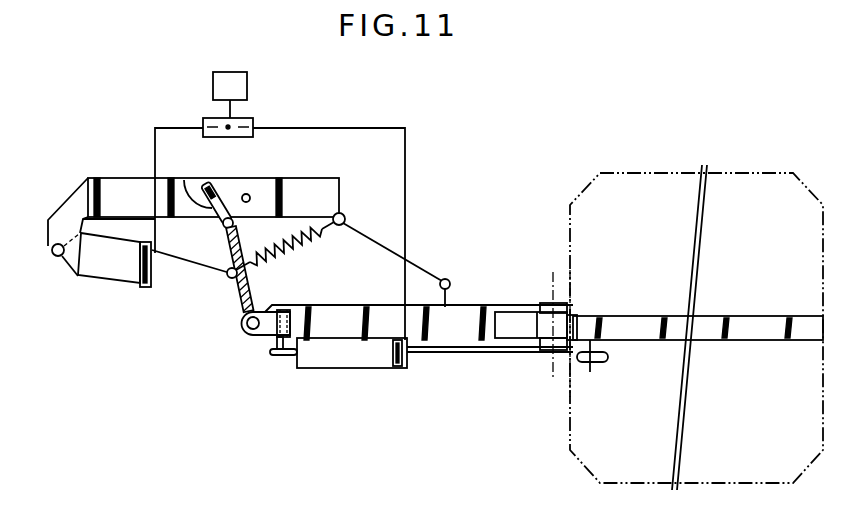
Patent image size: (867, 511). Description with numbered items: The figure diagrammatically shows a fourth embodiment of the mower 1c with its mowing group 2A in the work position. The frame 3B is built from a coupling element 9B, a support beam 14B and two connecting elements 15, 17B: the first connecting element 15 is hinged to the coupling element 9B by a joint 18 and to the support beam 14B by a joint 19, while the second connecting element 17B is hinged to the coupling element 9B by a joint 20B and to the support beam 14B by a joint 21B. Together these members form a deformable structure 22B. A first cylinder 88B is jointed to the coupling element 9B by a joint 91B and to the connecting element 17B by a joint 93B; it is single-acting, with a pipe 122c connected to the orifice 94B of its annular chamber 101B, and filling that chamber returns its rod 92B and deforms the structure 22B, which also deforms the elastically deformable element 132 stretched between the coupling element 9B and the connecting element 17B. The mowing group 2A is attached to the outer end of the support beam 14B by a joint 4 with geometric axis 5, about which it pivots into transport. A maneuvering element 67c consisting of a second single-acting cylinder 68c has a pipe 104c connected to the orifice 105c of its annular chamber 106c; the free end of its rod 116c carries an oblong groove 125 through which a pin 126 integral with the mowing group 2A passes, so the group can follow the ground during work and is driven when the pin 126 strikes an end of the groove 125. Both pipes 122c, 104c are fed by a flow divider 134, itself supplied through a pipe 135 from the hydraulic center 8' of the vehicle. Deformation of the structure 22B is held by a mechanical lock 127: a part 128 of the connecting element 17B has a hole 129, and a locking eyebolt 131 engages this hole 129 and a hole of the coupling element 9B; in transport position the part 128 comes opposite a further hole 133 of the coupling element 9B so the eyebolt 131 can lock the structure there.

The mower 1c is at (494, 238).
The mowing group 2A is at (761, 315).
The frame 3B is at (73, 180).
The joint 4 is at (545, 302).
The geometric axis 5 is at (553, 273).
The hydraulic center 8' is at (230, 68).
The coupling element 9B is at (340, 178).
The support beam 14B is at (317, 315).
The first connecting element 15 is at (384, 249).
The second connecting element 17B is at (247, 282).
The joint 18 is at (353, 210).
The joint 19 is at (445, 279).
The joint 20B is at (234, 225).
The joint 21B is at (248, 333).
The deformable structure 22B is at (395, 292).
The maneuvering element 67c is at (310, 371).
The second cylinder 68c is at (356, 369).
The first cylinder 88B is at (79, 277).
The joint 91B is at (54, 256).
The rod 92B is at (183, 259).
The joint 93B is at (231, 279).
The orifice 94B is at (146, 243).
The annular chamber 101B is at (145, 288).
The pipe 104c is at (405, 130).
The orifice 105c is at (401, 338).
The annular chamber 106c is at (404, 365).
The rod 116c is at (478, 353).
The pipe 122c is at (155, 128).
The oblong groove 125 is at (608, 359).
The pin 126 is at (590, 366).
The mechanical lock 127 is at (222, 178).
The part 128 is at (222, 219).
The hole 129 is at (186, 183).
The locking eyebolt 131 is at (206, 183).
The elastically deformable element 132 is at (298, 250).
The hole 133 is at (249, 195).
The flow divider 134 is at (205, 120).
The pipe 135 is at (232, 111).